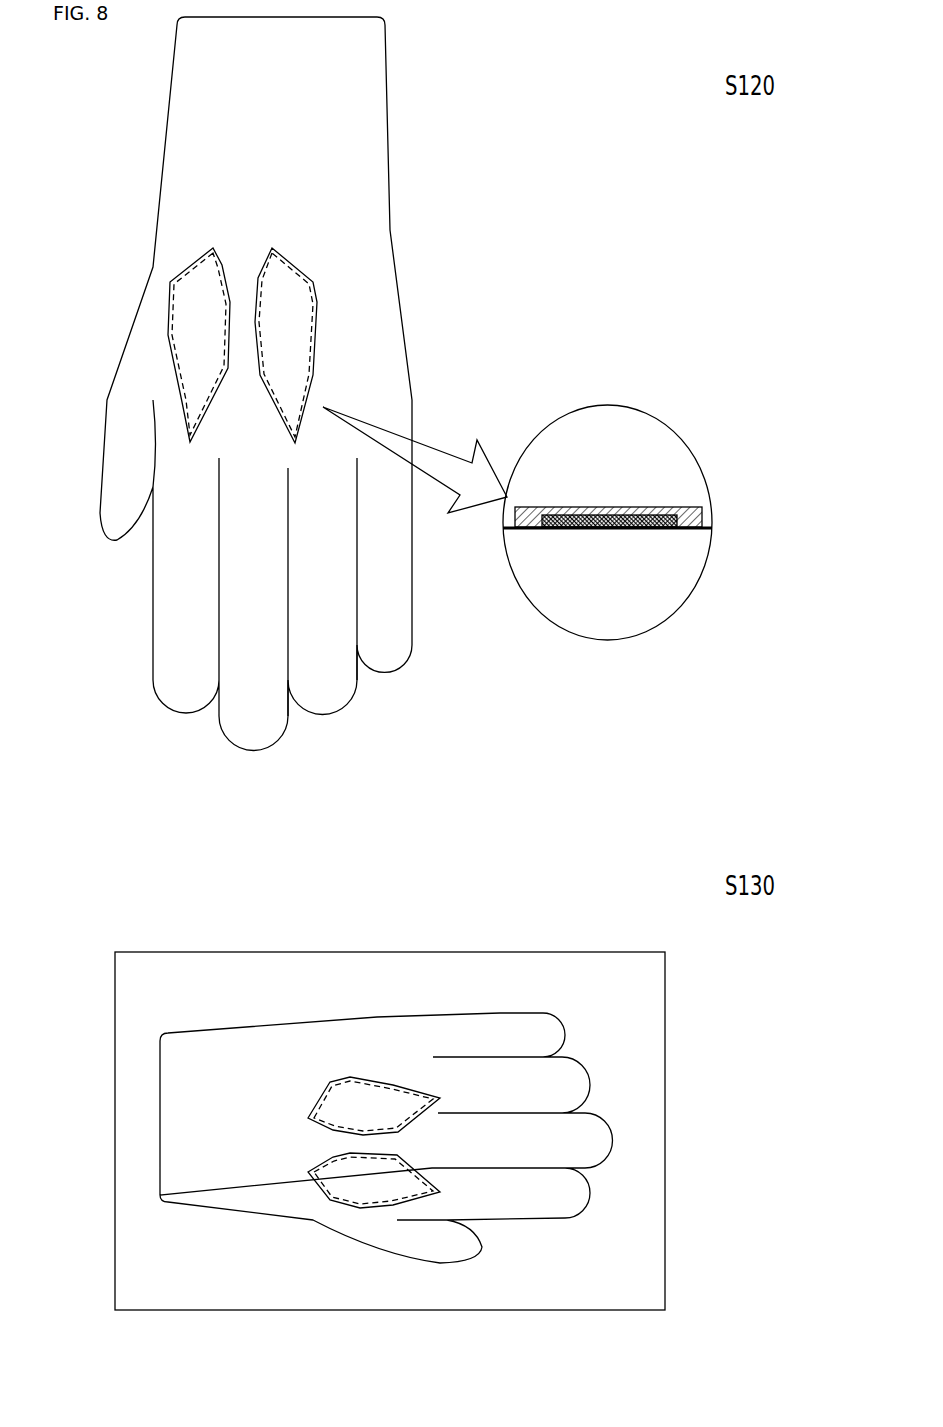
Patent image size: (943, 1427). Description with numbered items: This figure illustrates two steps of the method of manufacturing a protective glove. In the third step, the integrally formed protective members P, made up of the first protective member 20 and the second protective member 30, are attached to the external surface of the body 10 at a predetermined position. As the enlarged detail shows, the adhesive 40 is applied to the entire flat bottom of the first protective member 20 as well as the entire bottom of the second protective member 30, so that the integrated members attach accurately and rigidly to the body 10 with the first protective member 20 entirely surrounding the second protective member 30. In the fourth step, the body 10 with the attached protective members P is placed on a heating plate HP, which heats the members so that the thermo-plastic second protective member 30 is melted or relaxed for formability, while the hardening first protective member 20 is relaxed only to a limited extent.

The body 10 is at (380, 98).
The first protective member 20 is at (313, 333).
The second protective member 30 is at (312, 377).
The adhesive 40 is at (707, 527).
The protective members P is at (502, 280).
The heating plate HP is at (665, 992).